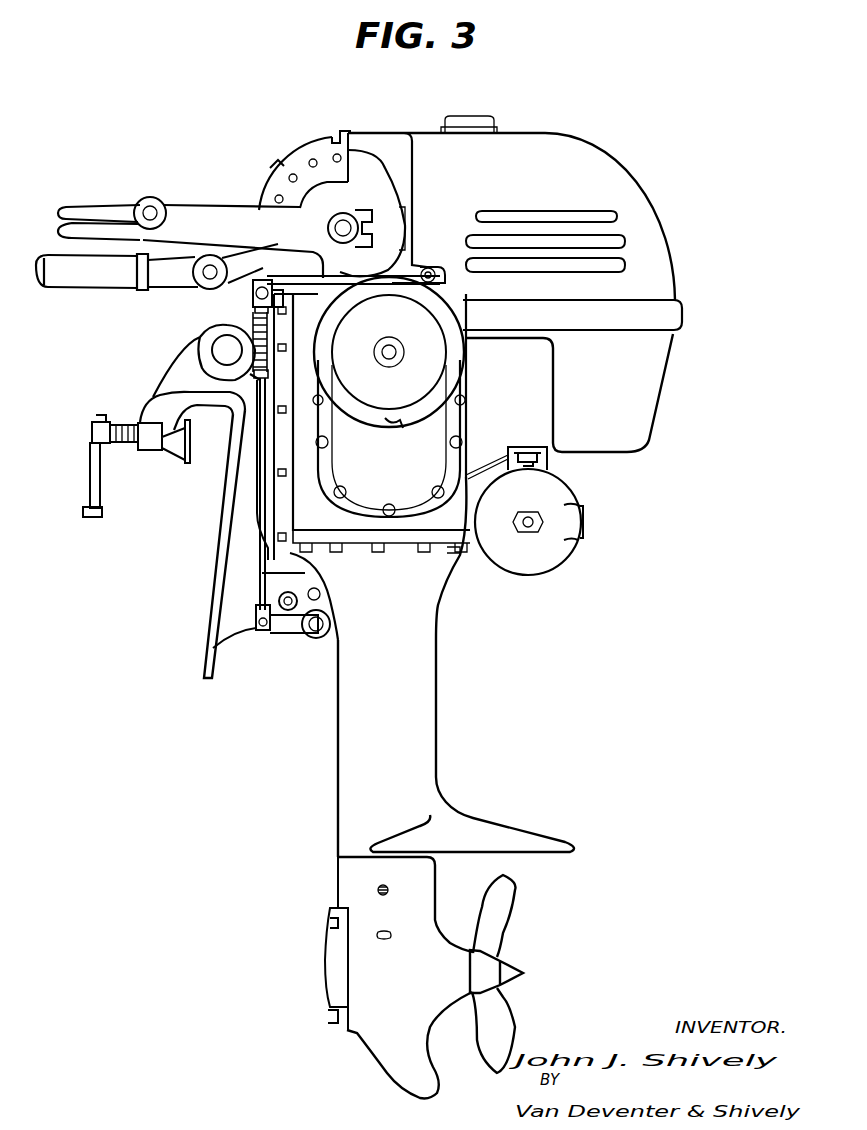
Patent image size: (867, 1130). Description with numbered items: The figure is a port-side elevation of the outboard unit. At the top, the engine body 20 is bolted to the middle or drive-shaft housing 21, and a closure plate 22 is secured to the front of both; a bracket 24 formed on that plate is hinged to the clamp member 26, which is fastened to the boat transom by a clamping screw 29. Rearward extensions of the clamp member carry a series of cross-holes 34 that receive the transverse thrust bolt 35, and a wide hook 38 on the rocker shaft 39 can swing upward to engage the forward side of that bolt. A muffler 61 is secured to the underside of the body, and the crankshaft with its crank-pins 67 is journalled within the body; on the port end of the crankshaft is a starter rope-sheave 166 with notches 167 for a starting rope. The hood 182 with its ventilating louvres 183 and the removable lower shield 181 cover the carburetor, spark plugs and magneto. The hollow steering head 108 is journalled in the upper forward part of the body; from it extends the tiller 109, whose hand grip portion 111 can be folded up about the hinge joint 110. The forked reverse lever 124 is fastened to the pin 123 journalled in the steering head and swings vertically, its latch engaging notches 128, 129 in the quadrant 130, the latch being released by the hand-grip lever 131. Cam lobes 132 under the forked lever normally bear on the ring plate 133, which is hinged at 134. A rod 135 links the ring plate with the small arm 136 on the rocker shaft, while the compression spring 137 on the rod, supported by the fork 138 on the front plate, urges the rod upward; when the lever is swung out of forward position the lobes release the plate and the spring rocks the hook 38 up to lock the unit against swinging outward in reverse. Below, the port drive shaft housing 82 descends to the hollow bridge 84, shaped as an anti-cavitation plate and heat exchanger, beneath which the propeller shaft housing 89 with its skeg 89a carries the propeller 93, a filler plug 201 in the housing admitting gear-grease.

The engine body 20 is at (458, 508).
The drive-shaft housing 21 is at (446, 568).
The closure plate 22 is at (255, 478).
The bracket 24 is at (222, 326).
The clamp member 26 is at (150, 394).
The clamping screw 29 is at (125, 444).
The cross-holes 34 is at (322, 590).
The thrust bolt 35 is at (290, 591).
The hook 38 is at (270, 636).
The rocker shaft 39 is at (316, 640).
The muffler 61 is at (562, 550).
The crank-pins 67 is at (400, 350).
The port drive shaft housing 82 is at (422, 708).
The bridge 84 is at (490, 830).
The propeller shaft housing 89 is at (437, 940).
The skeg 89a is at (390, 1077).
The propeller 93 is at (508, 907).
The steering head 108 is at (374, 158).
The tiller 109 is at (168, 278).
The hinge joint 110 is at (208, 280).
The hand grip portion 111 is at (75, 276).
The pin 123 is at (345, 215).
The reverse lever 124 is at (222, 214).
The notch 128 is at (275, 162).
The notch 129 is at (343, 137).
The quadrant 130 is at (307, 150).
The hand-grip lever 131 is at (108, 232).
The cam lobes 132 is at (355, 268).
The ring plate 133 is at (259, 289).
The hinge 134 is at (431, 266).
The rod 135 is at (257, 580).
The small arm 136 is at (290, 636).
The compression spring 137 is at (253, 318).
The fork 138 is at (250, 381).
The rope-sheave 166 is at (362, 416).
The notches 167 is at (398, 424).
The lower shield 181 is at (643, 428).
The hood 182 is at (603, 160).
The louvres 183 is at (604, 242).
The filler plug 201 is at (390, 936).